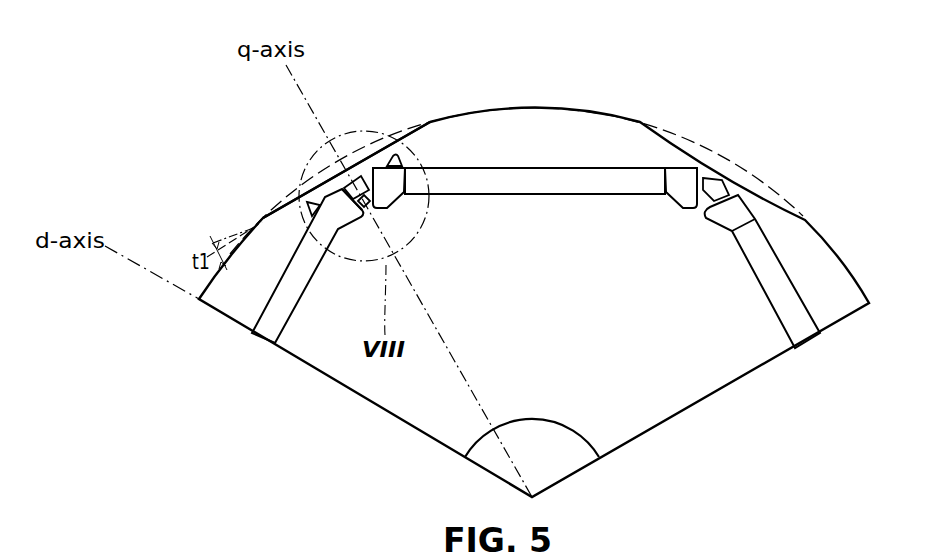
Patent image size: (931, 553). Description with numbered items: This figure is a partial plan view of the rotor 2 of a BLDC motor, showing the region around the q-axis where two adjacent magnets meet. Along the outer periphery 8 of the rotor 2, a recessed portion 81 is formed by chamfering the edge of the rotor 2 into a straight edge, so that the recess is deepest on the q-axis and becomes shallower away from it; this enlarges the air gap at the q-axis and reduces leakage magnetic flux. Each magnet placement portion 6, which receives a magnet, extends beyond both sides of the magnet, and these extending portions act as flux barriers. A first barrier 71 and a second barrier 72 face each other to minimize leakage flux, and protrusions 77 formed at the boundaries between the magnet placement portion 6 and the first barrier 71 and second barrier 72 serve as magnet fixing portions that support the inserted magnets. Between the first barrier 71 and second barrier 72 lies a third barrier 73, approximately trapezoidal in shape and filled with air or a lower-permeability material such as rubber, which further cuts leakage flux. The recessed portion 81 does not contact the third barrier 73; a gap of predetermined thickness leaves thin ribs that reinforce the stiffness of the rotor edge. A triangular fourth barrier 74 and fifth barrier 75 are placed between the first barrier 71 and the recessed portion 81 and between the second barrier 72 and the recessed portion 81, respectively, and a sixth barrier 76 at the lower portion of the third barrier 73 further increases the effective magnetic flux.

The rotor 2 is at (684, 380).
The magnet placement portion 6 is at (540, 184).
The outer periphery 8 is at (594, 110).
The first barrier 71 is at (390, 198).
The second barrier 72 is at (346, 222).
The third barrier 73 is at (360, 194).
The fourth barrier 74 is at (308, 200).
The fifth barrier 75 is at (397, 153).
The sixth barrier 76 is at (368, 207).
The protrusion 77 is at (401, 170).
The recessed portion 81 is at (283, 206).